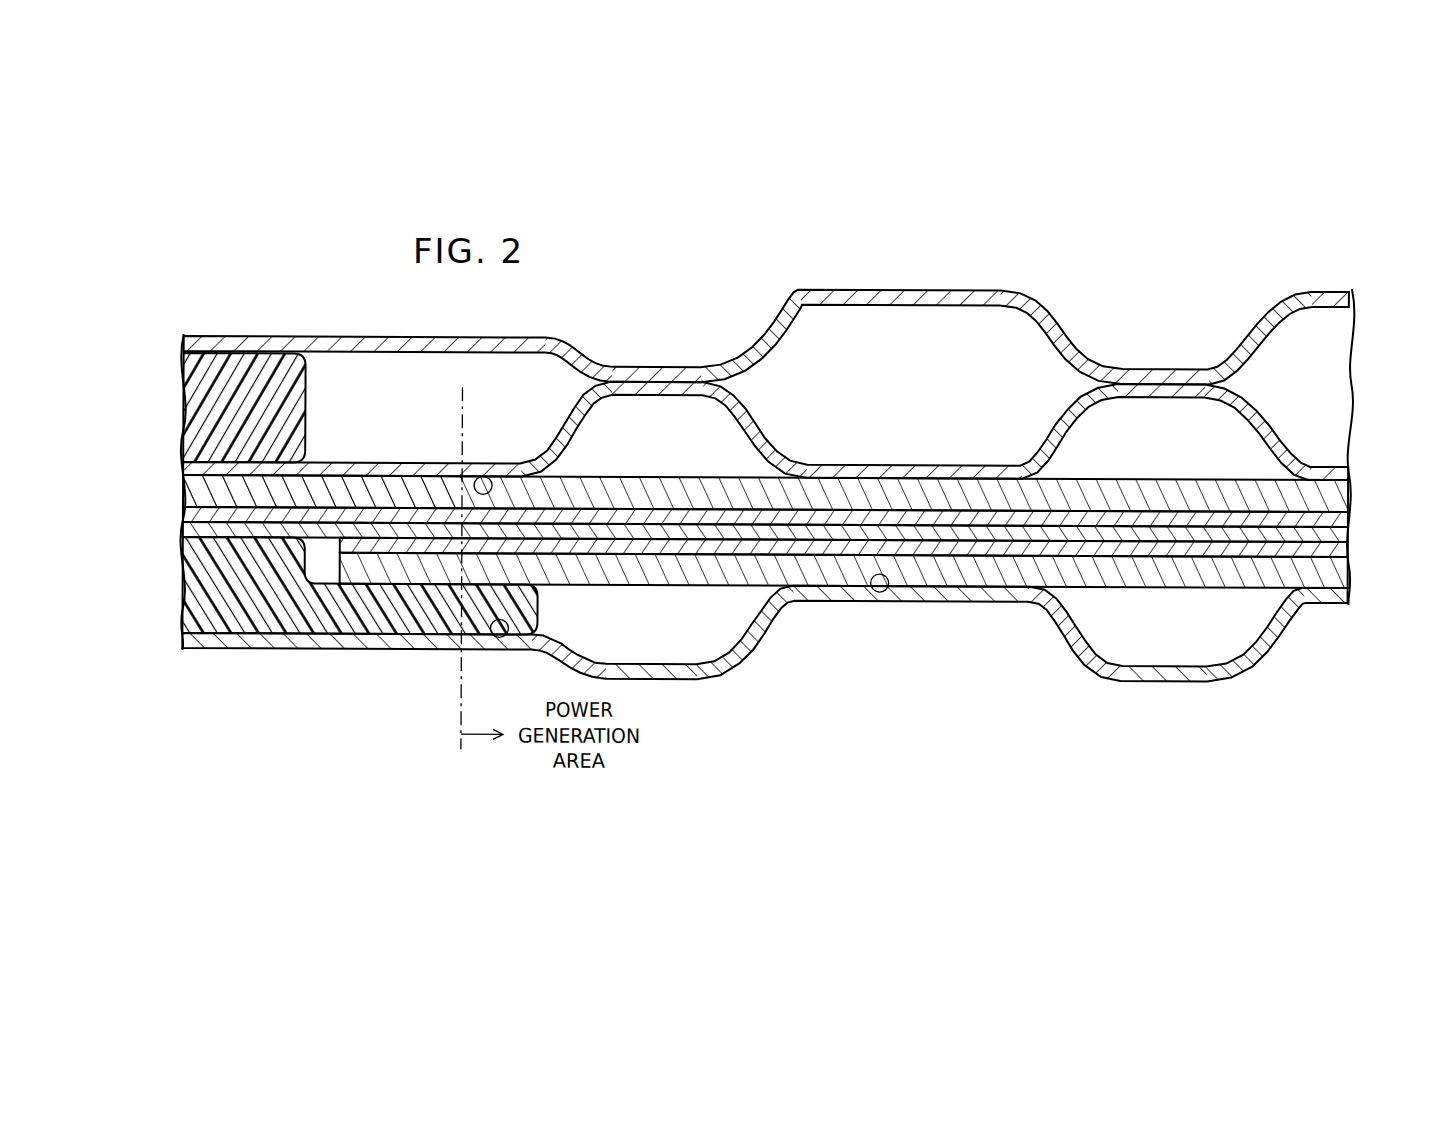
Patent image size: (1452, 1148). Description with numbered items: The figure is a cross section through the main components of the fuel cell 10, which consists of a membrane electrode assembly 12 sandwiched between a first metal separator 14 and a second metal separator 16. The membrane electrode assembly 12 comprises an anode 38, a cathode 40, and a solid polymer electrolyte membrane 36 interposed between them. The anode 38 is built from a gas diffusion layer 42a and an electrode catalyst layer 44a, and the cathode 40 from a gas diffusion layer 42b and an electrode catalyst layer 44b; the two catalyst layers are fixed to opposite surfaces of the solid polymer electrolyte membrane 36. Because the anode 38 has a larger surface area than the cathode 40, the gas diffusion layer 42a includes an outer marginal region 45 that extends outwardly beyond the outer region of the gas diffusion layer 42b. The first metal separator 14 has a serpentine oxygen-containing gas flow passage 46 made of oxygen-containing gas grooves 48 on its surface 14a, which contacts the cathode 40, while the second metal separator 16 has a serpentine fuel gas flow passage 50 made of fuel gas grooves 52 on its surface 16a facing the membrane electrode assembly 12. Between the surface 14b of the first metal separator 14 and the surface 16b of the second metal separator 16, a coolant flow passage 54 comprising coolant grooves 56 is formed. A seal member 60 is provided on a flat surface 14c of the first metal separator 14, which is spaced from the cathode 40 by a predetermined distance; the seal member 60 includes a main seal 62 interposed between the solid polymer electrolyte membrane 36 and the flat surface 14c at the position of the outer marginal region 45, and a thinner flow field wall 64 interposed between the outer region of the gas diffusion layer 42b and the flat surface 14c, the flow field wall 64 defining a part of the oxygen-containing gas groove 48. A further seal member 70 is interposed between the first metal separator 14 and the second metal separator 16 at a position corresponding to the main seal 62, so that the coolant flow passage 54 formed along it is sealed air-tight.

The fuel cell 10 is at (668, 290).
The membrane electrode assembly 12 is at (815, 483).
The first metal separator 14 is at (1090, 316).
The surface 14a is at (881, 589).
The surface 14b is at (687, 377).
The flat surface 14c is at (500, 636).
The second metal separator 16 is at (1316, 437).
The surface 16a is at (480, 475).
The surface 16b is at (629, 394).
The solid polymer electrolyte membrane 36 is at (1350, 528).
The anode 38 is at (766, 449).
The cathode 40 is at (893, 565).
The gas diffusion layer 42a is at (895, 497).
The electrode catalyst layer 44a is at (955, 515).
The gas diffusion layer 42b is at (1330, 560).
The electrode catalyst layer 44b is at (1330, 544).
The outer marginal region 45 is at (275, 493).
The serpentine oxygen-containing gas flow passage 46 is at (723, 611).
The oxygen-containing gas grooves 48 is at (907, 627).
The serpentine fuel gas flow passage 50 is at (599, 436).
The fuel gas grooves 52 is at (907, 447).
The coolant flow passage 54 is at (815, 322).
The coolant grooves 56 is at (910, 336).
The seal member 60 is at (326, 610).
The main seal 62 is at (229, 607).
The flow field wall 64 is at (434, 612).
The seal member 70 is at (292, 383).